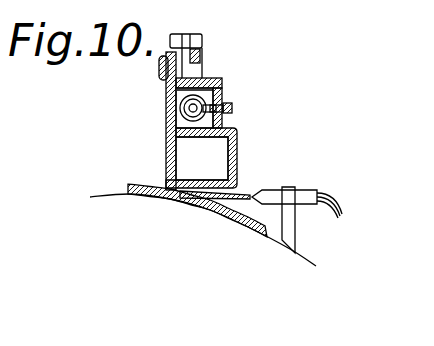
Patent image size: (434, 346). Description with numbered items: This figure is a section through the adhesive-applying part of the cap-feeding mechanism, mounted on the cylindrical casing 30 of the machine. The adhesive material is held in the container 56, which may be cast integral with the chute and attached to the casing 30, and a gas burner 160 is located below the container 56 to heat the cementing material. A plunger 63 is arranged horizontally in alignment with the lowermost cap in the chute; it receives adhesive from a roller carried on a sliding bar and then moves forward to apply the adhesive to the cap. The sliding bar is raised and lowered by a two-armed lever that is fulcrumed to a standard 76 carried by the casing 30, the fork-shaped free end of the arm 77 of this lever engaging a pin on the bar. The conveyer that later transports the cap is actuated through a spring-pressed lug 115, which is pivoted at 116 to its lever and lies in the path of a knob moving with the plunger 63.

The cylindrical casing 30 is at (138, 187).
The container 56 is at (222, 158).
The plunger 63 is at (200, 98).
The standard 76 is at (168, 60).
The arm 77 is at (203, 56).
The spring pressed lug 115 is at (233, 110).
The pivot 116 is at (222, 100).
The gas burner 160 is at (308, 192).